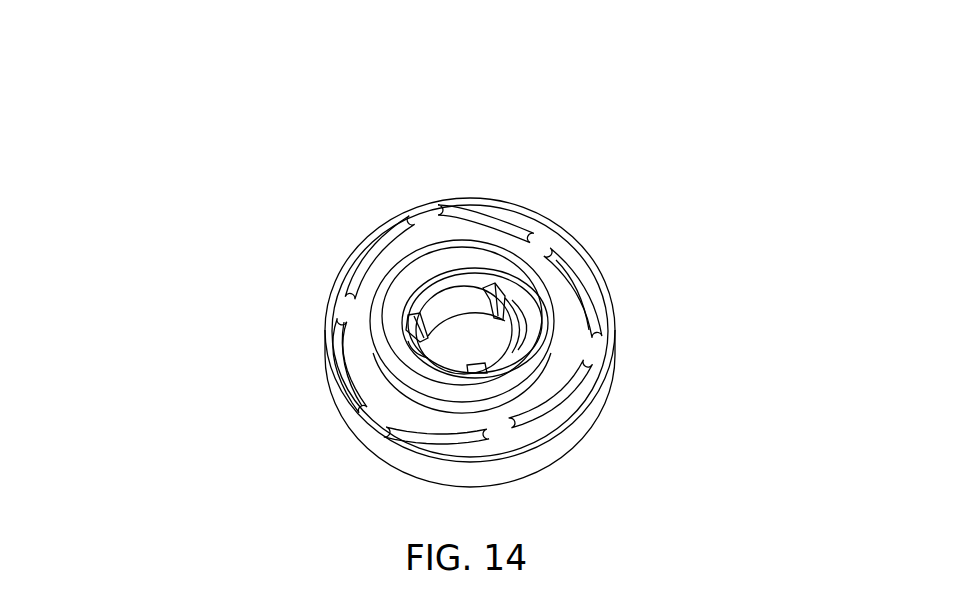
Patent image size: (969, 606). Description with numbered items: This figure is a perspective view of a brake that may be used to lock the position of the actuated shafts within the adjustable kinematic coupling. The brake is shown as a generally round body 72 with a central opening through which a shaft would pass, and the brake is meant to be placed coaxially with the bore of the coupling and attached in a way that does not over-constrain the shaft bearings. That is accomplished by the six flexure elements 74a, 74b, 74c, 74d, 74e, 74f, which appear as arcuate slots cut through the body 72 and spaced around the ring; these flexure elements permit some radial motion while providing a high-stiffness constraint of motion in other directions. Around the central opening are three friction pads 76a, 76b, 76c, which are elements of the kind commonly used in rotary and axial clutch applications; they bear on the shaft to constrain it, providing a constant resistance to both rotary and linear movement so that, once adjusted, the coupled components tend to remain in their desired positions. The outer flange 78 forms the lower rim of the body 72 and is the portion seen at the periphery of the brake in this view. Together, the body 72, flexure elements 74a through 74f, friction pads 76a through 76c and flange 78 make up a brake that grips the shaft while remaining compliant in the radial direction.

The annular body 72 is at (318, 317).
The flexure element 74a is at (355, 267).
The flexure element 74b is at (340, 372).
The flexure element 74c is at (428, 442).
The flexure element 74d is at (552, 412).
The flexure element 74e is at (587, 283).
The flexure element 74f is at (490, 222).
The friction pad 76a is at (473, 283).
The friction pad 76b is at (412, 346).
The friction pad 76c is at (513, 317).
The flange 78 is at (522, 466).